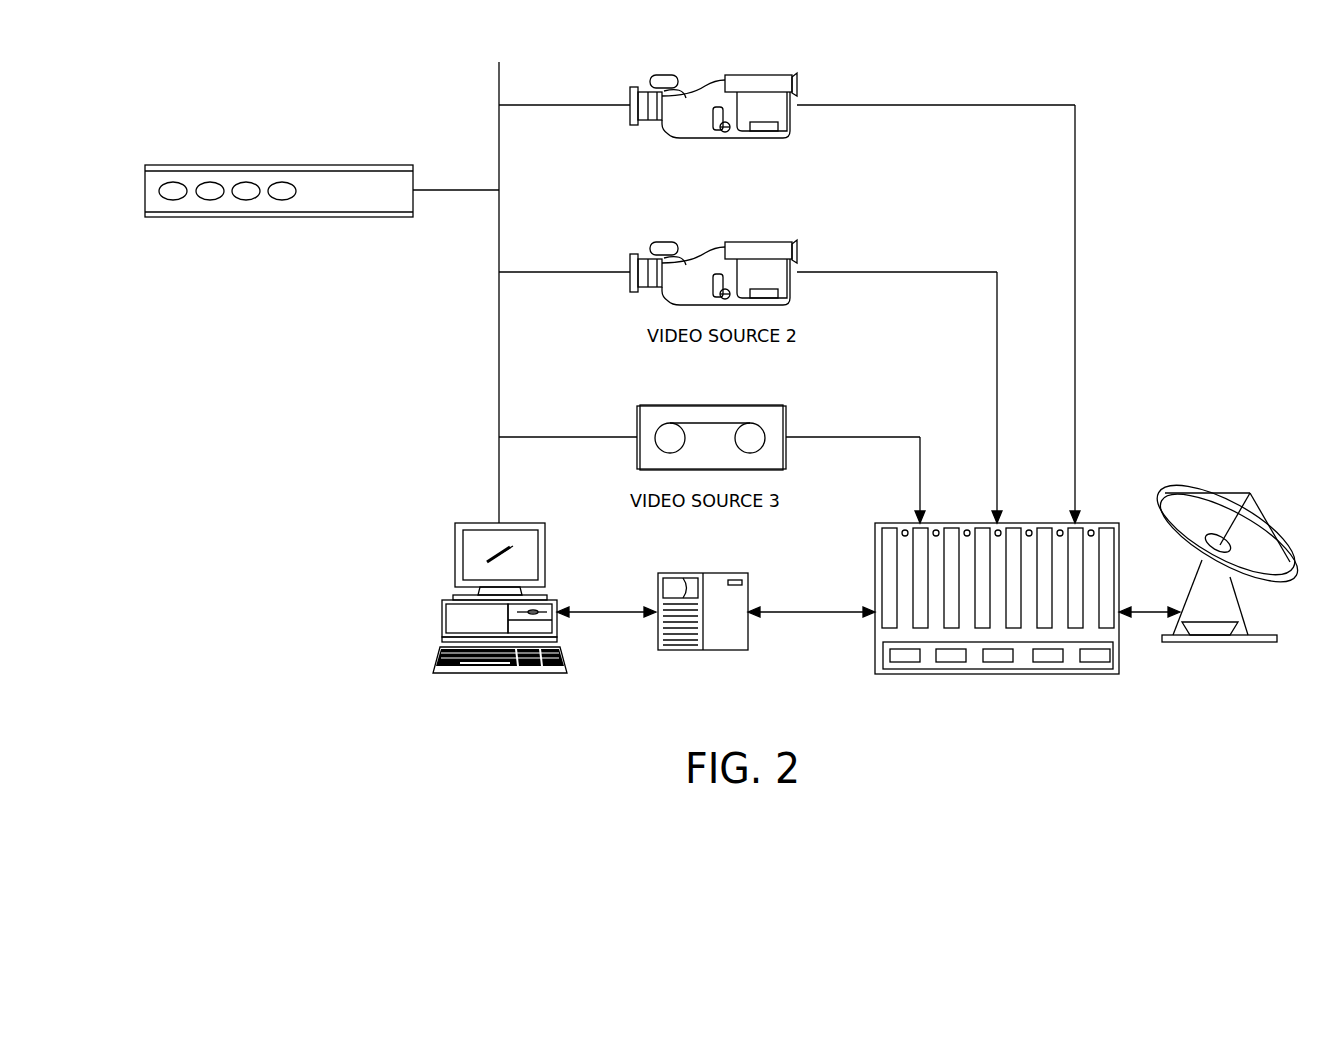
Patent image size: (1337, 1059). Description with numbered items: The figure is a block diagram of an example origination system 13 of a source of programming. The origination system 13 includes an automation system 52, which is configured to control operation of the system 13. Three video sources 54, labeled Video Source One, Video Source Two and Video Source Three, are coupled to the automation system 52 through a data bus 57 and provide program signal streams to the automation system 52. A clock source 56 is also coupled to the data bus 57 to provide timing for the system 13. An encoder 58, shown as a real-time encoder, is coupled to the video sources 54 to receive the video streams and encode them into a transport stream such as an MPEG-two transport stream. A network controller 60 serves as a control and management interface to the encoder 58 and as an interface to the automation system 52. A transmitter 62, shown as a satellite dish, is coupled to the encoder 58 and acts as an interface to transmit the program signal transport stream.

The origination system 13 is at (1177, 112).
The automation system 52 is at (472, 522).
The video sources 54 is at (770, 55).
The clock source 56 is at (184, 164).
The data bus 57 is at (499, 72).
The encoder 58 is at (890, 522).
The network controller 60 is at (672, 572).
The transmitter 62 is at (1183, 490).